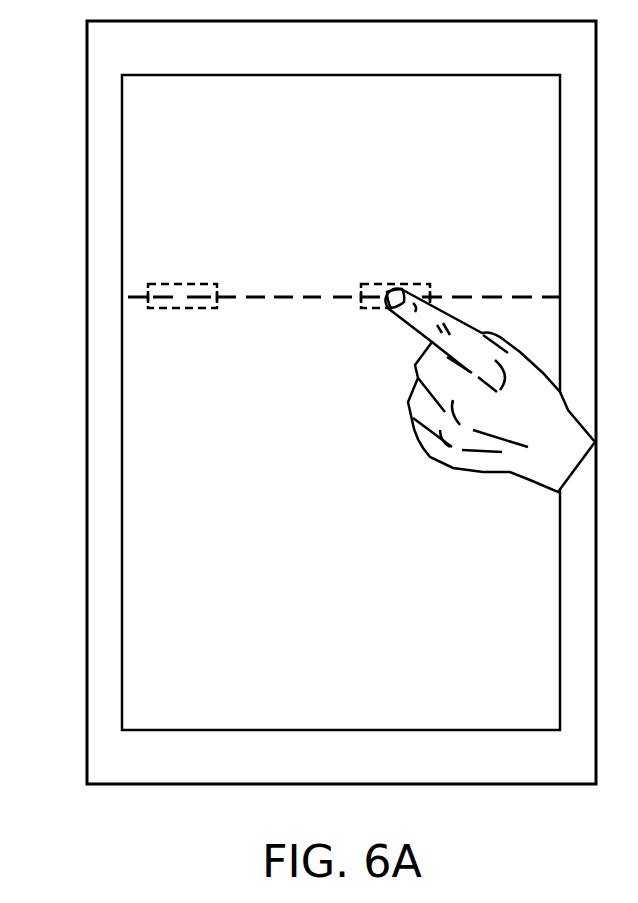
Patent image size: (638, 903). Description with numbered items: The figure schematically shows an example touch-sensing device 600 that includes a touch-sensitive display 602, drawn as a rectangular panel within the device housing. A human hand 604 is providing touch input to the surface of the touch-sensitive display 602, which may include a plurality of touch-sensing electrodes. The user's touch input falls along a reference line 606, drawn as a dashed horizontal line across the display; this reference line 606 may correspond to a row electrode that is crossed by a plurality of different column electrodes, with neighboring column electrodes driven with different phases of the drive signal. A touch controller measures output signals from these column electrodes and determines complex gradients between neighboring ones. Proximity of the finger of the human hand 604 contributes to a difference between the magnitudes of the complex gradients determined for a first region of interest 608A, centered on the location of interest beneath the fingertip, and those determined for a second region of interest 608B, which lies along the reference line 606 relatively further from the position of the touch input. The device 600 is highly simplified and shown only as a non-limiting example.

The touch-sensing device 600 is at (86, 54).
The touch-sensitive display 602 is at (173, 75).
The human hand 604 is at (412, 329).
The reference line 606 is at (253, 298).
The first region of interest 608A is at (397, 286).
The second region of interest 608B is at (181, 284).